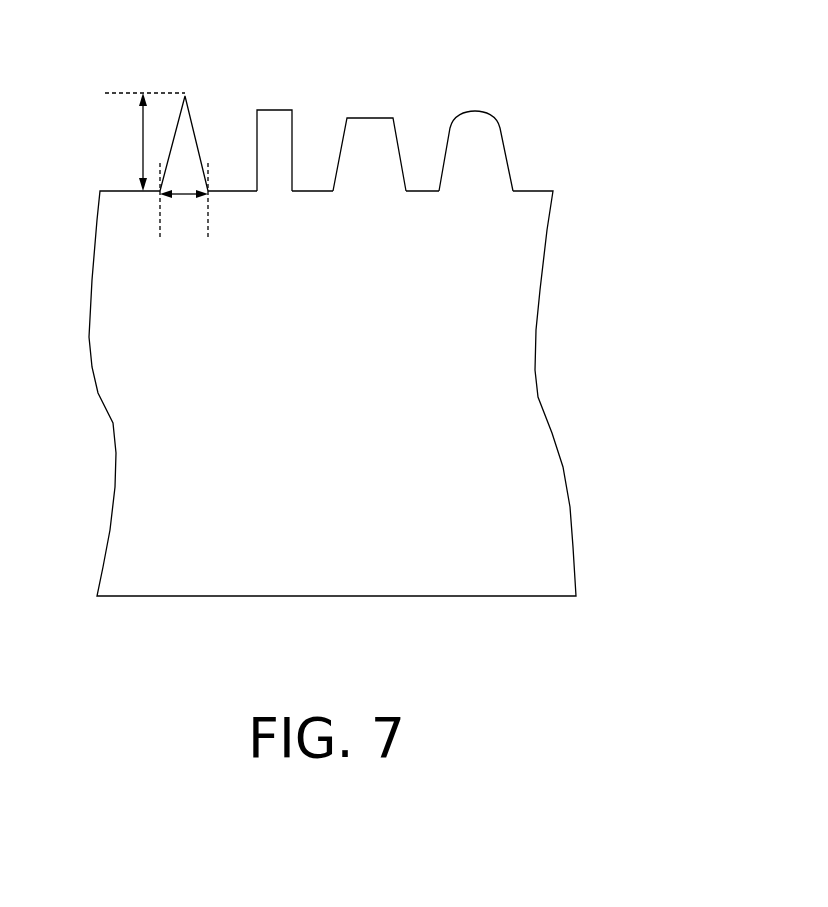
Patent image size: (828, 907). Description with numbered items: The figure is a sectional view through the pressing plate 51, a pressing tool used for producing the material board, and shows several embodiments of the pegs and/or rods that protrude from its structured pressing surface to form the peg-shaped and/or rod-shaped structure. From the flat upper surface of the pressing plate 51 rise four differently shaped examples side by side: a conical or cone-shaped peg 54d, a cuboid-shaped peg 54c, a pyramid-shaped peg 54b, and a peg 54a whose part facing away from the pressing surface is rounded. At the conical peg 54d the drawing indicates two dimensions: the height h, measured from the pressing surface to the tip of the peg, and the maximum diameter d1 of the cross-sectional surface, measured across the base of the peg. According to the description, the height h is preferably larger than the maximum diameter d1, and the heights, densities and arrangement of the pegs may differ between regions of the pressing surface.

The pressing plate 51 is at (623, 217).
The pegs and/or rods having rounded surfaces 54a is at (495, 155).
The pyramid-shaped pegs and/or rods 54b is at (377, 118).
The cuboid-shaped pegs and/or rods 54c is at (276, 120).
The conical or cone-shaped pegs and/or rods 54d is at (188, 132).
The height of the pegs and/or rods h is at (143, 140).
The maximum diameter of the cross-sectional surface d1 is at (186, 200).